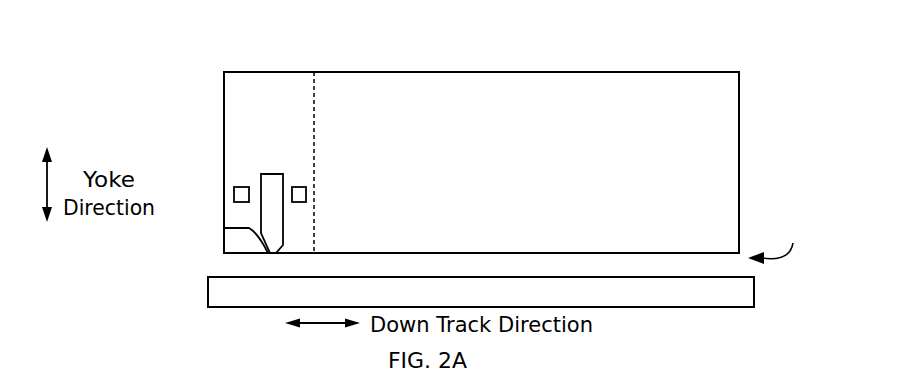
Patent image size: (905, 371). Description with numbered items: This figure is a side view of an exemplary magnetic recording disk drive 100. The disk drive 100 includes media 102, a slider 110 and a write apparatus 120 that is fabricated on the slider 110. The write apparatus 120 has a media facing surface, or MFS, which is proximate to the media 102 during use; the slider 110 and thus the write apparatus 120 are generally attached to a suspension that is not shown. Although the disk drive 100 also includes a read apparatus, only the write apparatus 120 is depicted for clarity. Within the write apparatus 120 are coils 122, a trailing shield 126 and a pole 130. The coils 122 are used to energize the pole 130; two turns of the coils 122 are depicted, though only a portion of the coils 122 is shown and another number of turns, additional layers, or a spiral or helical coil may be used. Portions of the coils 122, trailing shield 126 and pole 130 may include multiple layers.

The disk drive 100 is at (447, 38).
The slider 110 is at (740, 133).
The write apparatus 120 is at (315, 125).
The coils 122 is at (299, 187).
The pole 130 is at (270, 175).
The trailing shield 126 is at (224, 233).
The media 102 is at (208, 305).